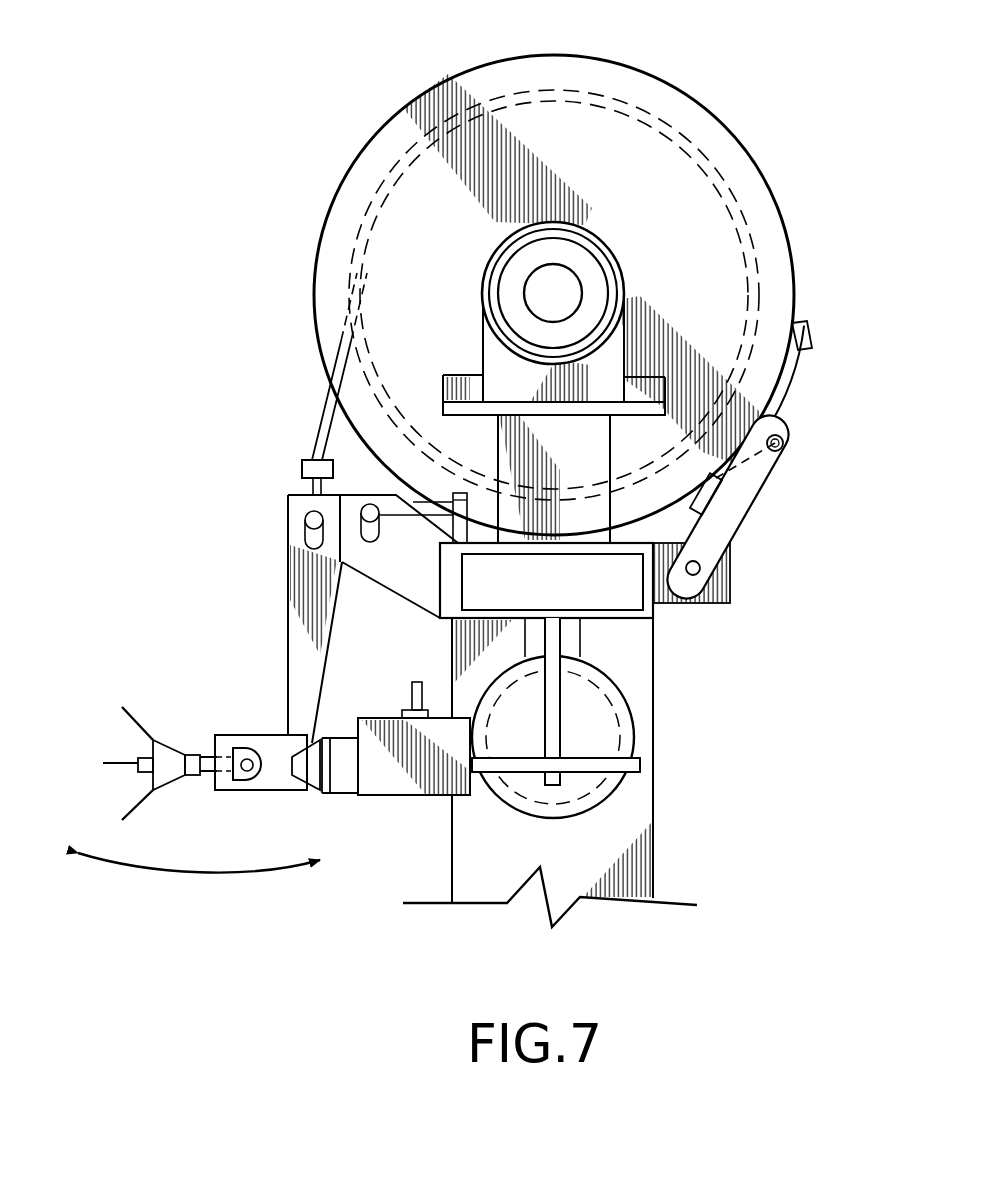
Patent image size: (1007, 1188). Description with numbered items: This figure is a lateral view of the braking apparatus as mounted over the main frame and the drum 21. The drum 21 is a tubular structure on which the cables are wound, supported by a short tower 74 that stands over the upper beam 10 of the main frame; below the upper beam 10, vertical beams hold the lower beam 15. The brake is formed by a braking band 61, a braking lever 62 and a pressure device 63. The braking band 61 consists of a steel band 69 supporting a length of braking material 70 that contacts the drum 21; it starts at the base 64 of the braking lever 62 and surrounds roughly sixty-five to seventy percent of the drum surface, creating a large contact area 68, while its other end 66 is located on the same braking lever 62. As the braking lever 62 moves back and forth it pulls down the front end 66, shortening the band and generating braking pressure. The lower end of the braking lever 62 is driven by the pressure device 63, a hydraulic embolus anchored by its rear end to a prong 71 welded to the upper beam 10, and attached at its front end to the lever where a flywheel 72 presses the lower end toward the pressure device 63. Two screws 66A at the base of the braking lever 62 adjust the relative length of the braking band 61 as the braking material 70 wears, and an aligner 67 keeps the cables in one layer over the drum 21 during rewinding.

The upper beam 10 is at (657, 603).
The lower beam 15 is at (612, 365).
The drum 21 is at (522, 128).
The braking band 61 is at (324, 399).
The braking lever 62 is at (310, 640).
The pressure device 63 is at (407, 779).
The base of the braking lever 64 is at (372, 550).
The front end of the braking band 66 is at (302, 521).
The screws 66A is at (310, 485).
The aligner 67 is at (806, 433).
The contact area 68 is at (646, 110).
The steel band 69 is at (565, 75).
The braking material 70 is at (719, 184).
The prong 71 is at (562, 745).
The flywheel 72 is at (150, 748).
The short tower 74 is at (589, 459).